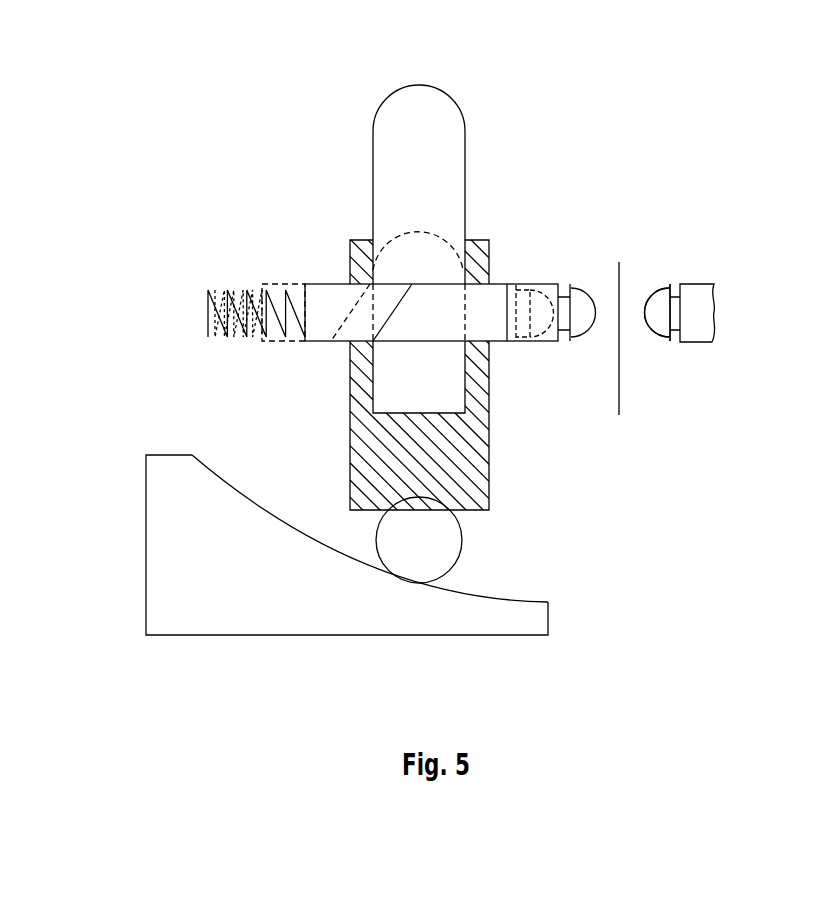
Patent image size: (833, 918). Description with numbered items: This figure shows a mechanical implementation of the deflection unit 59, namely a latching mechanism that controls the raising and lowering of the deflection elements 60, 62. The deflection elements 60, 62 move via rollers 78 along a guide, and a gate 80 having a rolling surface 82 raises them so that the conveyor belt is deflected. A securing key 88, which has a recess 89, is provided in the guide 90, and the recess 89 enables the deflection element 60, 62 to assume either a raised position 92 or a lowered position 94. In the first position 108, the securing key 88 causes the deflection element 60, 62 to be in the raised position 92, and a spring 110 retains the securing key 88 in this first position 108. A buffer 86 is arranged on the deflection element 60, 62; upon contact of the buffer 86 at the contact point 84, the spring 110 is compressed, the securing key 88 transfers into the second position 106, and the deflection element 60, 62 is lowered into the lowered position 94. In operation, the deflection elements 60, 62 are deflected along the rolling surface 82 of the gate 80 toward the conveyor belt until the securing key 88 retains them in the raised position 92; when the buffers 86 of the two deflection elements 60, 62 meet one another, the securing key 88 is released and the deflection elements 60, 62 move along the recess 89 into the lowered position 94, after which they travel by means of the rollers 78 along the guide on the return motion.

The deflection unit 59 is at (699, 220).
The deflection element 60 is at (423, 177).
The deflection element 62 is at (402, 216).
The roller 78 is at (445, 543).
The gate 80 is at (347, 522).
The rolling surface 82 is at (247, 500).
The contact point 84 is at (619, 393).
The buffer 86 is at (598, 233).
The securing key 88 is at (267, 278).
The recess 89 is at (445, 296).
The guide 90 is at (465, 393).
The raised position 92 is at (423, 145).
The lowered position 94 is at (411, 197).
The second position 106 is at (548, 217).
The first position 108 is at (603, 217).
The spring 110 is at (208, 313).